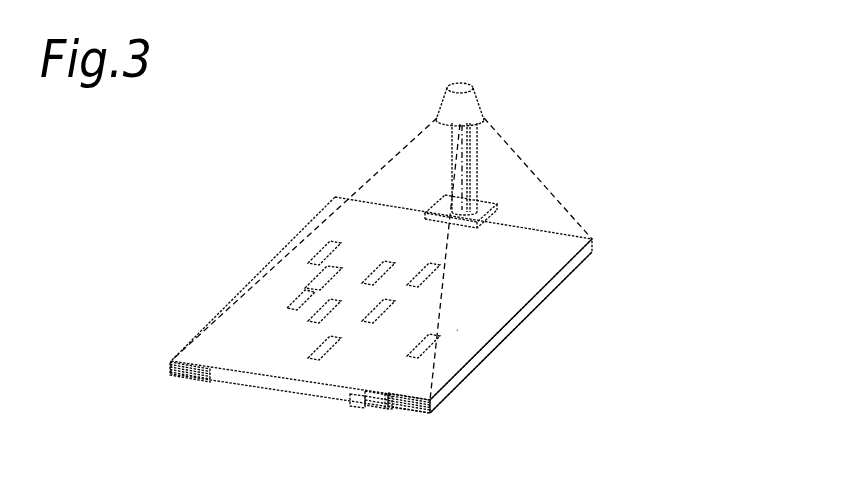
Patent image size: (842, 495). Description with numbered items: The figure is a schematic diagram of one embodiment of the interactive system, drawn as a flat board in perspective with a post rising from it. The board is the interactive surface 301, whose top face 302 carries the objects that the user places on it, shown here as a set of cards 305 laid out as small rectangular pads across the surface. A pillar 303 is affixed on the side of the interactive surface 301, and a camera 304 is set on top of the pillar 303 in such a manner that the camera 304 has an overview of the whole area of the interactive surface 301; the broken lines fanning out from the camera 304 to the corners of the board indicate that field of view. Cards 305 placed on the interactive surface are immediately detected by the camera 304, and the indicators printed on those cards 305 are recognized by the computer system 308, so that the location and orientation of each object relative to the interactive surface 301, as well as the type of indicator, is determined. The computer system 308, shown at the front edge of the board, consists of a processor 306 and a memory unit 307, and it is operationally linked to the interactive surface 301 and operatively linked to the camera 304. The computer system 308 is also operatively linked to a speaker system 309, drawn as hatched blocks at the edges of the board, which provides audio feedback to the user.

The interactive surface 301 is at (597, 245).
The top surface of substrate 302 is at (457, 330).
The pillar 303 is at (463, 182).
The camera 304 is at (465, 107).
The cards 305 is at (313, 345).
The processor 306 is at (388, 412).
The memory unit 307 is at (362, 405).
The computer system 308 is at (360, 410).
The speaker system 309 is at (170, 372).